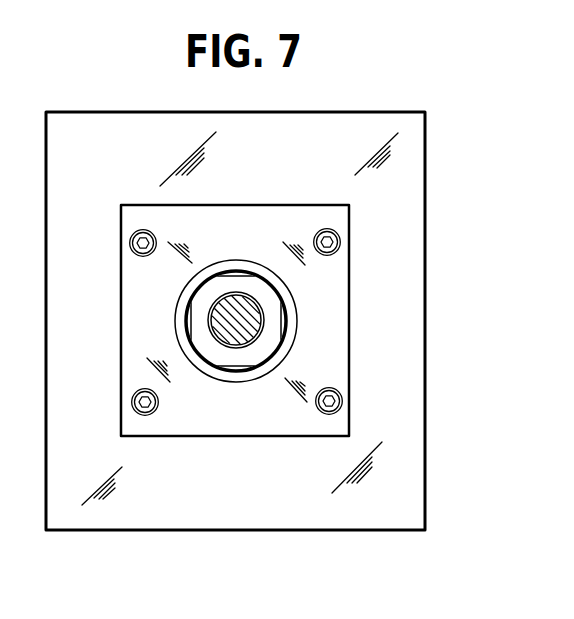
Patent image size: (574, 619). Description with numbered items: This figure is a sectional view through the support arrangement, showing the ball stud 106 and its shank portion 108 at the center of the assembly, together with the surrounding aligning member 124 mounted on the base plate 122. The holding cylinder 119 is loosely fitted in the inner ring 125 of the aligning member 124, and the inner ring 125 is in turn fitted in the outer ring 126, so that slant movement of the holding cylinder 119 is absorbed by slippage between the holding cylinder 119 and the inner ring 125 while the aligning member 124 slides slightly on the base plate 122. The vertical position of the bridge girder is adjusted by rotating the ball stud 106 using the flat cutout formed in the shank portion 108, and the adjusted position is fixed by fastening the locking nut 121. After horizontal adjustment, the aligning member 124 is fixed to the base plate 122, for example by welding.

The ball stud 106 is at (232, 349).
The shank portion 108 is at (247, 320).
The holding cylinder 119 is at (190, 317).
The locking nut 121 is at (203, 348).
The base plate 122 is at (412, 378).
The aligning member 124 is at (350, 232).
The inner ring 125 is at (288, 340).
The outer ring 126 is at (337, 276).